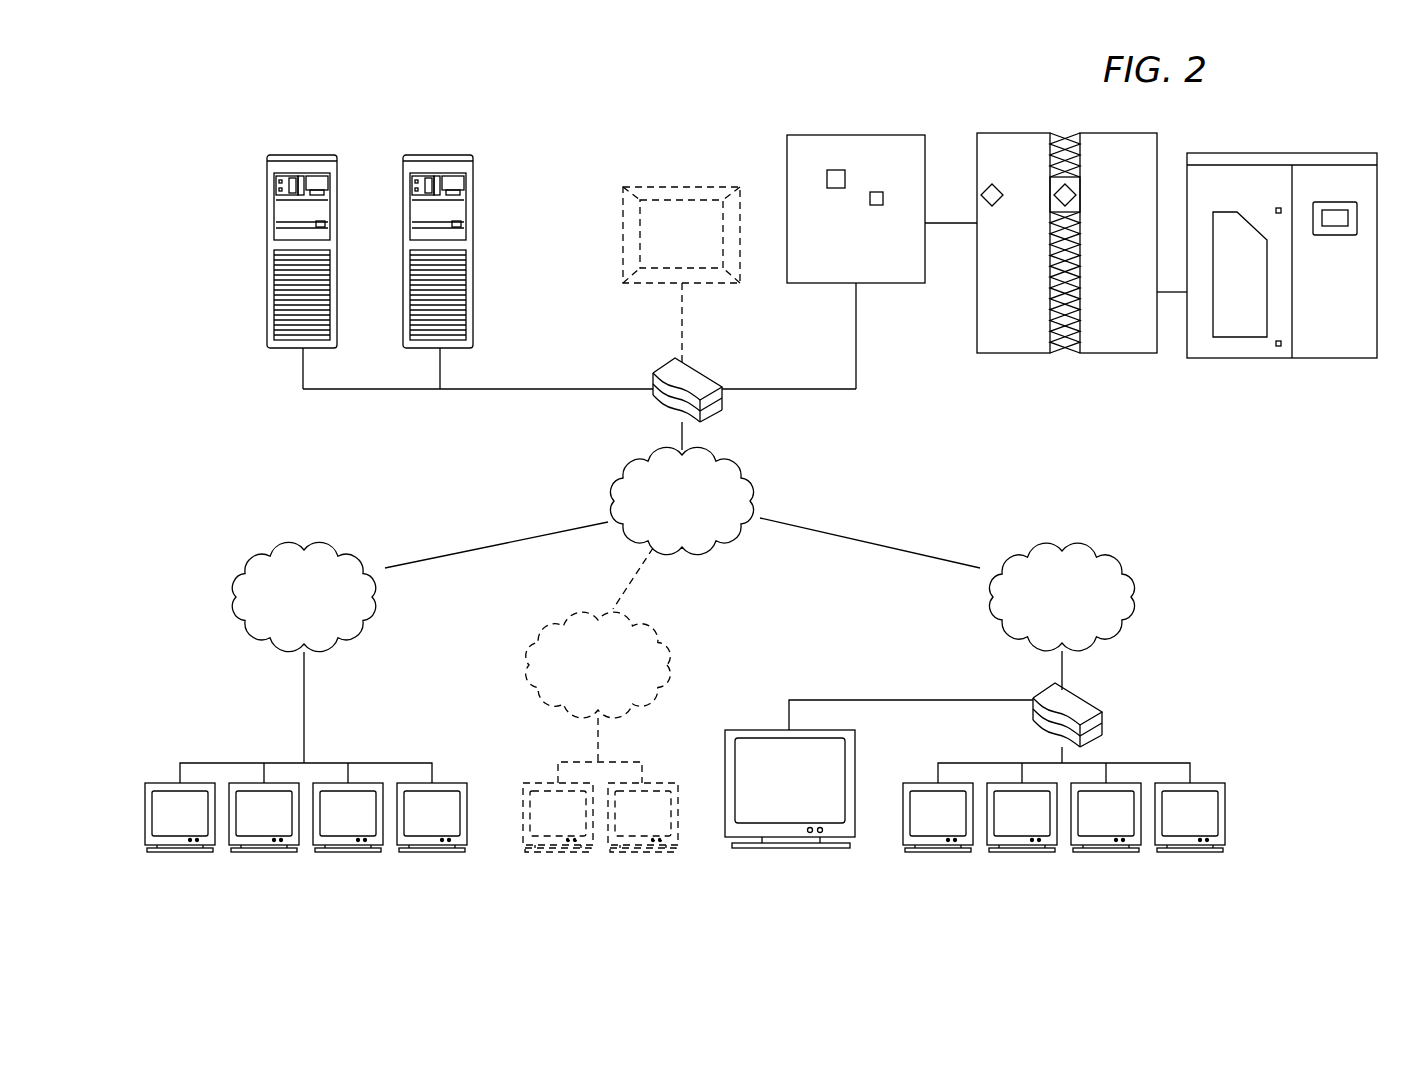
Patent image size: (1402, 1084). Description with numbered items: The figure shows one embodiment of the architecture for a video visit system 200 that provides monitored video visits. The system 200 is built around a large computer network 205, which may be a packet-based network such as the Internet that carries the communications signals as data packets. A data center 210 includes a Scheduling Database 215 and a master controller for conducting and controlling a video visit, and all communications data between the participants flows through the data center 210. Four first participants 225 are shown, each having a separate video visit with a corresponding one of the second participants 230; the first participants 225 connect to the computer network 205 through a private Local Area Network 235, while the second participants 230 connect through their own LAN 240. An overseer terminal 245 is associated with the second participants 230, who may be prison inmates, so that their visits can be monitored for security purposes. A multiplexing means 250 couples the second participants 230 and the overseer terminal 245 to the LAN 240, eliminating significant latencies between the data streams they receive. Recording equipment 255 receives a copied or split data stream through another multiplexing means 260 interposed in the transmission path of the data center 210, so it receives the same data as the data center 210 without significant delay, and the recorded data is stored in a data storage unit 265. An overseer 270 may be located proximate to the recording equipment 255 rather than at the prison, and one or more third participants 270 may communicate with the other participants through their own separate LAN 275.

The video visit system 200 is at (1314, 600).
The computer network 205 is at (663, 513).
The data center 210 is at (311, 84).
The Scheduling Database 215 is at (266, 210).
The first participants 225 is at (232, 740).
The second participants 230 is at (1168, 740).
The Local Area Network (LAN) 235 is at (285, 610).
The LAN 240 is at (1043, 610).
The overseer monitor station/terminal 245 is at (758, 729).
The multiplexing means 250 is at (1085, 710).
The Recording equipment 255 is at (966, 102).
The multiplexing means 260 is at (703, 380).
The data storage unit 265 is at (1331, 153).
The overseer / third participants 270 is at (663, 246).
The LAN 275 is at (579, 680).